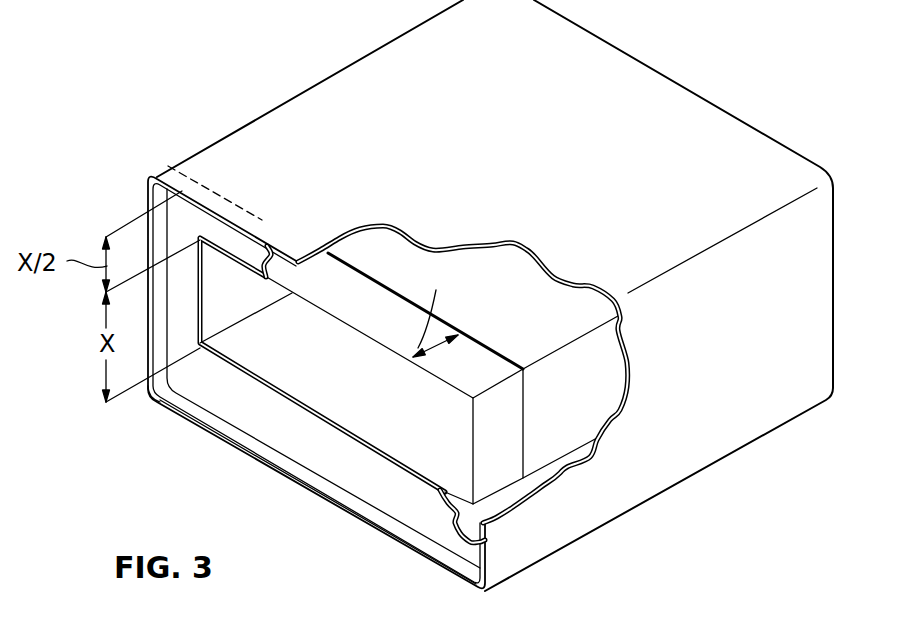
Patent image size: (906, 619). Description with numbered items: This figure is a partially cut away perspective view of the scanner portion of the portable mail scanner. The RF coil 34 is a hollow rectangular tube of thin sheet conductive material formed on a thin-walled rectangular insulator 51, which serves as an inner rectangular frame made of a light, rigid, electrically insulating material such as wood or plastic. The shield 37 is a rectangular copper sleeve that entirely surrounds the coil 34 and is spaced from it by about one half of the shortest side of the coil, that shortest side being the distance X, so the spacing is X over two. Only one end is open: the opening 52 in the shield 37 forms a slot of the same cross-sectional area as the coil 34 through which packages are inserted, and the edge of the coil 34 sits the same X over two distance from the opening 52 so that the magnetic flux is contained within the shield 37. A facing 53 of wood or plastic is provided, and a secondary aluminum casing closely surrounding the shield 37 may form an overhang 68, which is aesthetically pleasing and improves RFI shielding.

The shield 37 is at (327, 85).
The RF coil 34 is at (482, 263).
The thin-walled rectangular insulator 51 is at (368, 295).
The opening 52 is at (317, 377).
The facing 53 is at (392, 488).
The overhang 68 is at (197, 415).